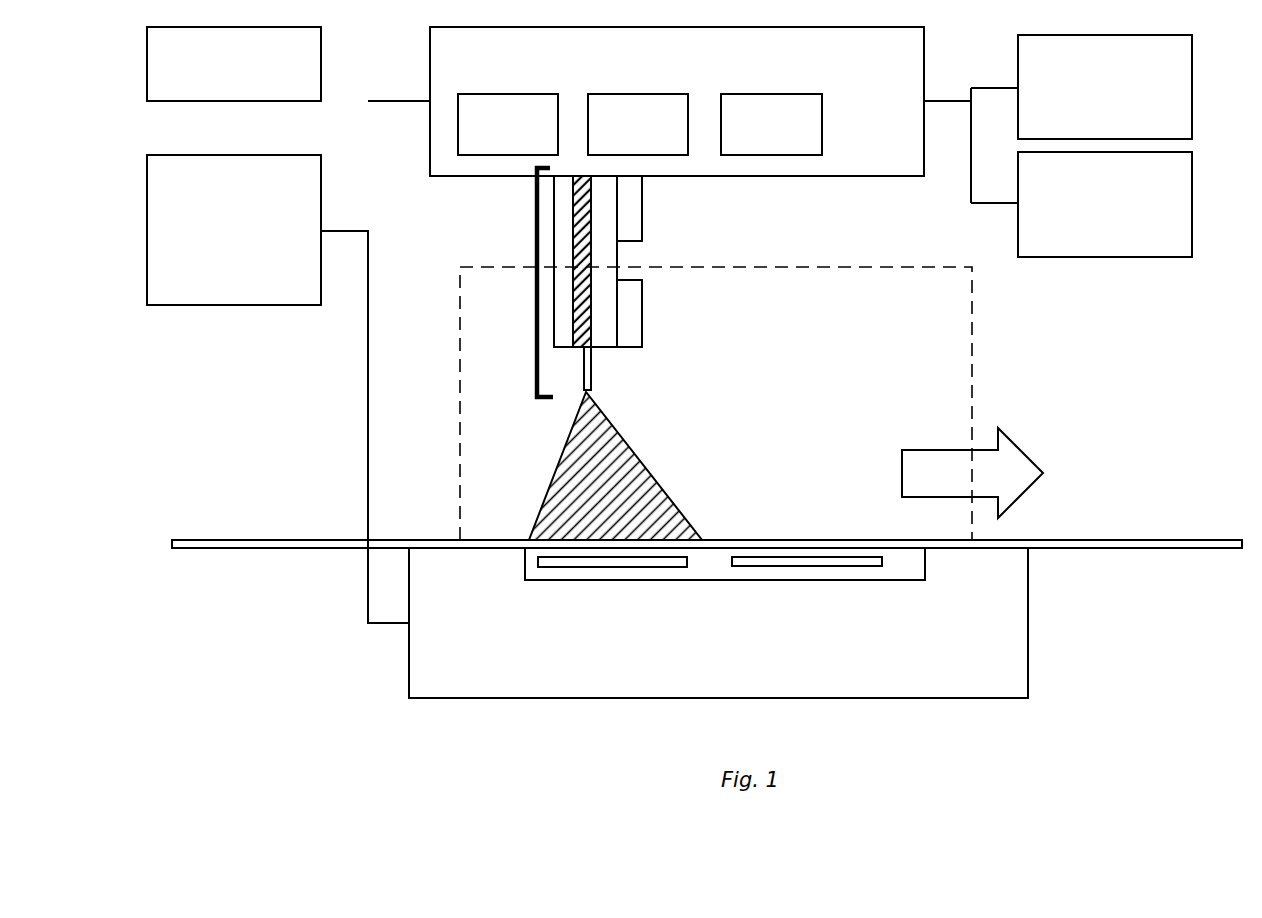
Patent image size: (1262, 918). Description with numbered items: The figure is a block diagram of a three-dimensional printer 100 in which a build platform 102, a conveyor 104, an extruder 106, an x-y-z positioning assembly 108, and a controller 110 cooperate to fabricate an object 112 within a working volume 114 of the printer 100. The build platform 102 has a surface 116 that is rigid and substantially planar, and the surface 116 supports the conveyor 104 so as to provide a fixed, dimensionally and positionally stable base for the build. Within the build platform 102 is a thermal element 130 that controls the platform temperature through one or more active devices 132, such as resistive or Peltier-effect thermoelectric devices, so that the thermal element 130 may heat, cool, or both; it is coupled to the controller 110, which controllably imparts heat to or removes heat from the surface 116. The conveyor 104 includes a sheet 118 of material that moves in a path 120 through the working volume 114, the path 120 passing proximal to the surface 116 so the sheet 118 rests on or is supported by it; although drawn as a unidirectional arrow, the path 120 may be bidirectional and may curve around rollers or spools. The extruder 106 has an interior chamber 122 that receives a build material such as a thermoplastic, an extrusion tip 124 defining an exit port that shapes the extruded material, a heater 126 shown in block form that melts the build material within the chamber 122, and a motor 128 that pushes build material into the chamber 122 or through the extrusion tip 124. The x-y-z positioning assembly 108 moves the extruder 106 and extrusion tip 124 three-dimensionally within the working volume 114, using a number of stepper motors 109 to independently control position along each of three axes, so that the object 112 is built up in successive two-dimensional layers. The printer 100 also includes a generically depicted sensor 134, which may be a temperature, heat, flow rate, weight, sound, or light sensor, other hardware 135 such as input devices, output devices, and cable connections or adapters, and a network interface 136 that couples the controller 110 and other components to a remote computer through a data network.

The printer 100 is at (1180, 372).
The build platform 102 is at (718, 623).
The conveyor 104 is at (238, 540).
The extruder 106 is at (537, 231).
The x-y-z positioning assembly 108 is at (677, 101).
The stepper motors 109 is at (640, 124).
The controller 110 is at (234, 230).
The object 112 is at (638, 455).
The working volume 114 is at (972, 400).
The surface 116 is at (502, 556).
The sheet of material 118 is at (1070, 538).
The path 120 is at (972, 473).
The chamber 122 is at (566, 291).
The extrusion tip 124 is at (584, 369).
The heater 126 is at (642, 310).
The motor 128 is at (642, 210).
The thermal element 130 is at (680, 580).
The active devices 132 is at (827, 568).
The sensor 134 is at (1105, 87).
The other hardware 135 is at (1105, 204).
The network interface 136 is at (234, 64).